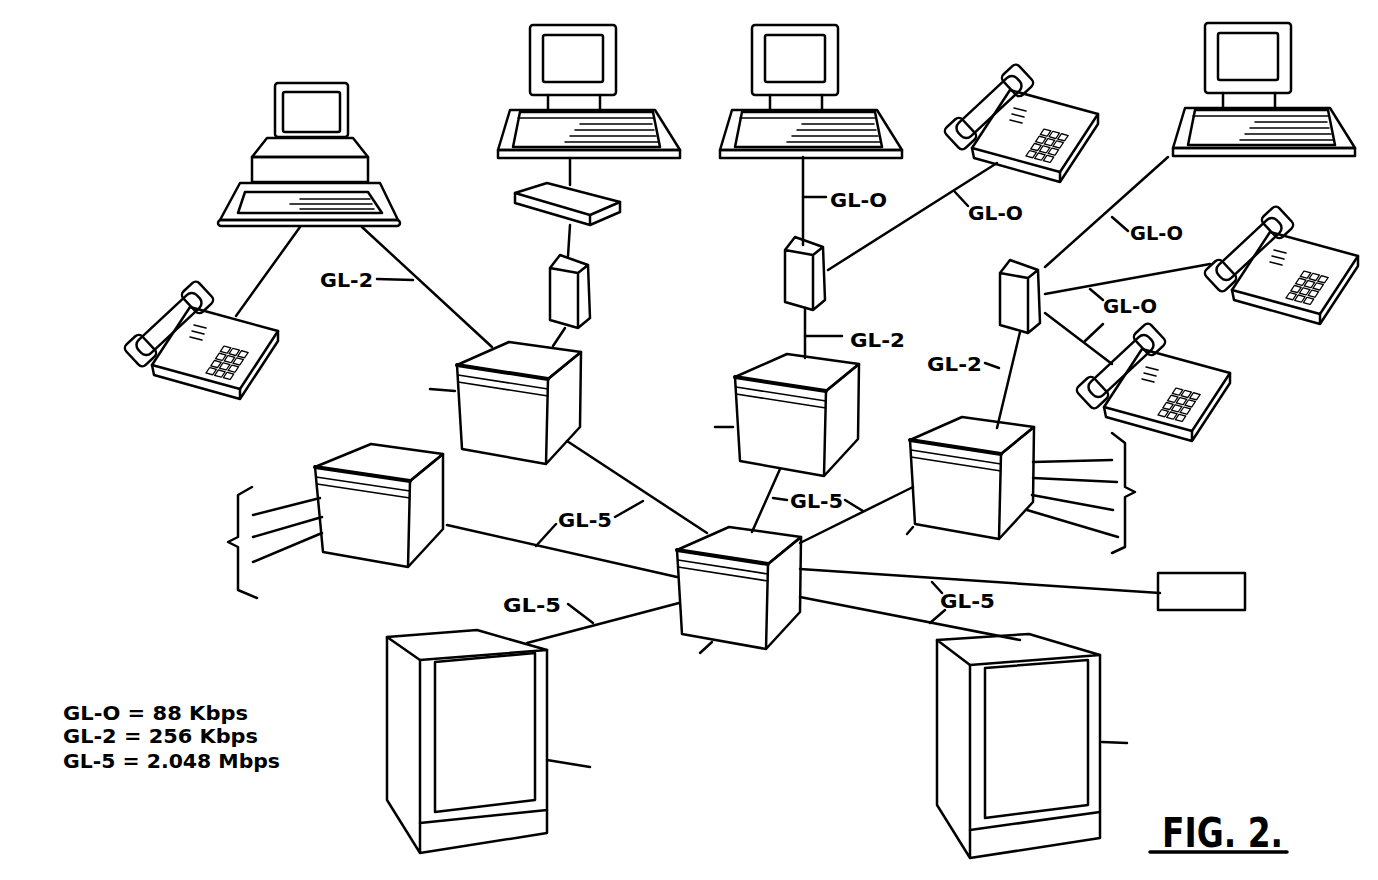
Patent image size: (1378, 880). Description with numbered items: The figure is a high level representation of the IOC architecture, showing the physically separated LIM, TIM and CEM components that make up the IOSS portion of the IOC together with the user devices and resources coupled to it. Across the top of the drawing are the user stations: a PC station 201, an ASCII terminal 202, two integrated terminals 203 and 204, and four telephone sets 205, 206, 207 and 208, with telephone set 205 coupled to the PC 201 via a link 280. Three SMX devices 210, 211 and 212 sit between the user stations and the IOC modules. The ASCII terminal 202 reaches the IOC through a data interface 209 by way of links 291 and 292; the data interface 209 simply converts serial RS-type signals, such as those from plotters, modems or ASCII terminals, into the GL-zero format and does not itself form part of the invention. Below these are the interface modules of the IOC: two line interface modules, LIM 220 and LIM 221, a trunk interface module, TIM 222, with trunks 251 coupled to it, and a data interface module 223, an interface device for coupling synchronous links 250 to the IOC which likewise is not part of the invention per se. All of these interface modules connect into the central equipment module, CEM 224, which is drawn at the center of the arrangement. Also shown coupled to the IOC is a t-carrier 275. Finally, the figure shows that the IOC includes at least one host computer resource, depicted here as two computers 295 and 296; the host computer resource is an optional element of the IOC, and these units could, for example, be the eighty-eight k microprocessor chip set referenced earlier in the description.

The PC station 201 is at (275, 122).
The ASCII terminal 202 is at (530, 48).
The integrated terminal 203 is at (838, 52).
The integrated terminal 204 is at (1264, 113).
The telephone set 205 is at (160, 370).
The telephone set 206 is at (1065, 105).
The telephone set 207 is at (1262, 305).
The telephone set 208 is at (1218, 407).
The data interface 209 is at (627, 208).
The SMX device 210 is at (592, 300).
The SMX device 211 is at (828, 292).
The SMX device 212 is at (1002, 272).
The LIM 220 is at (448, 400).
The LIM 221 is at (727, 415).
The TIM 222 is at (979, 495).
The data interface module 223 is at (379, 505).
The CEM 224 is at (714, 622).
The synchronous links 250 is at (192, 542).
The trunks 251 is at (1156, 493).
The t-carrier 275 is at (1219, 605).
The link 280 is at (272, 260).
The link 291 is at (568, 168).
The link 292 is at (568, 236).
The host computer 295 is at (547, 741).
The host computer 296 is at (1094, 746).